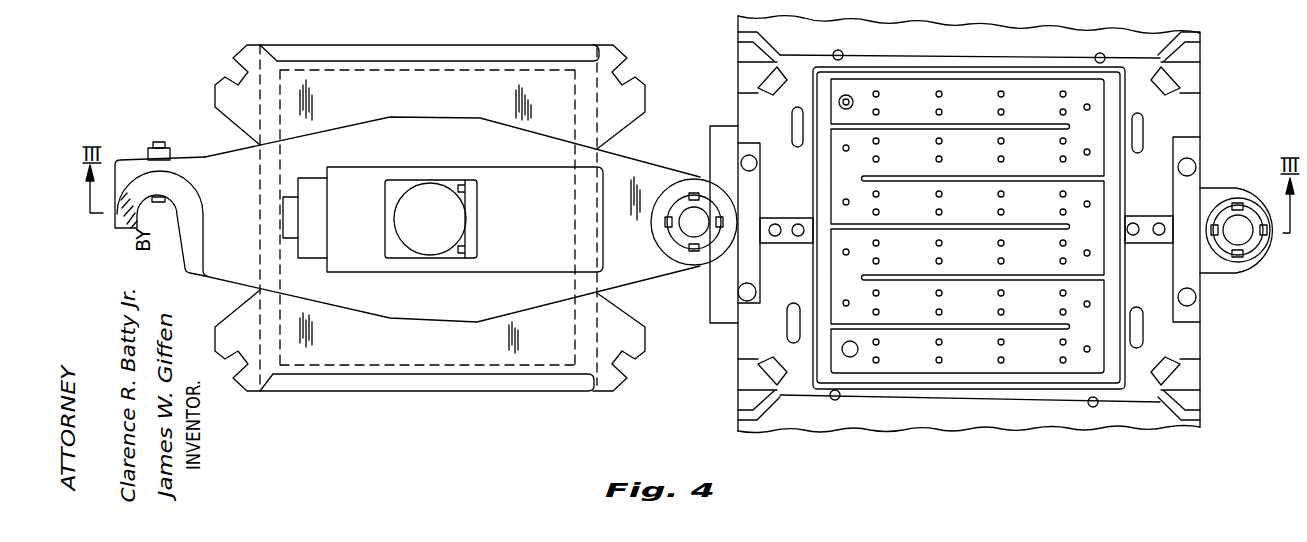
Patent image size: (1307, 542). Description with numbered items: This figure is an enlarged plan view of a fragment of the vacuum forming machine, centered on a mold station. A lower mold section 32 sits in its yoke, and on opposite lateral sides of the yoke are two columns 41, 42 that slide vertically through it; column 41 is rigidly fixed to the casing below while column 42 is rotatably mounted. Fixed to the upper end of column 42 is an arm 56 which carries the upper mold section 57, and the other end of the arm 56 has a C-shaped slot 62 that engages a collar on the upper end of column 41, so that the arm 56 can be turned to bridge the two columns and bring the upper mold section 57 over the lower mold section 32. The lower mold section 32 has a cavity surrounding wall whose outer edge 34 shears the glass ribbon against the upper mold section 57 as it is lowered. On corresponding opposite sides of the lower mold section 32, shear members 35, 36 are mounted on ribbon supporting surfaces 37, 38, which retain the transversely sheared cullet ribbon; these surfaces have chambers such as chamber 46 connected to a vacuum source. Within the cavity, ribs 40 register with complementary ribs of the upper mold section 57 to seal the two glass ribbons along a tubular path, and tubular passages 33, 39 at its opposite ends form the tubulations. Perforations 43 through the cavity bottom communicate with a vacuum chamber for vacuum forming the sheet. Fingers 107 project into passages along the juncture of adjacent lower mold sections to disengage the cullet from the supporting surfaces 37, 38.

The lower mold section 32 is at (1057, 57).
The tubular passage 33 is at (858, 102).
The outer edge 34 is at (1123, 385).
The shear member 35 is at (786, 218).
The shear member 36 is at (1167, 244).
The ribbon supporting surface 37 is at (792, 281).
The ribbon supporting surface 38 is at (1131, 302).
The tubular passage 39 is at (862, 346).
The rib 40 is at (983, 124).
The column 41 is at (1245, 218).
The column 42 is at (684, 212).
The perforation 43 is at (877, 211).
The chamber 46 is at (1137, 310).
The arm 56 is at (412, 117).
The upper mold section 57 is at (477, 62).
The C-shaped slot 62 is at (177, 199).
The finger 107 is at (838, 50).